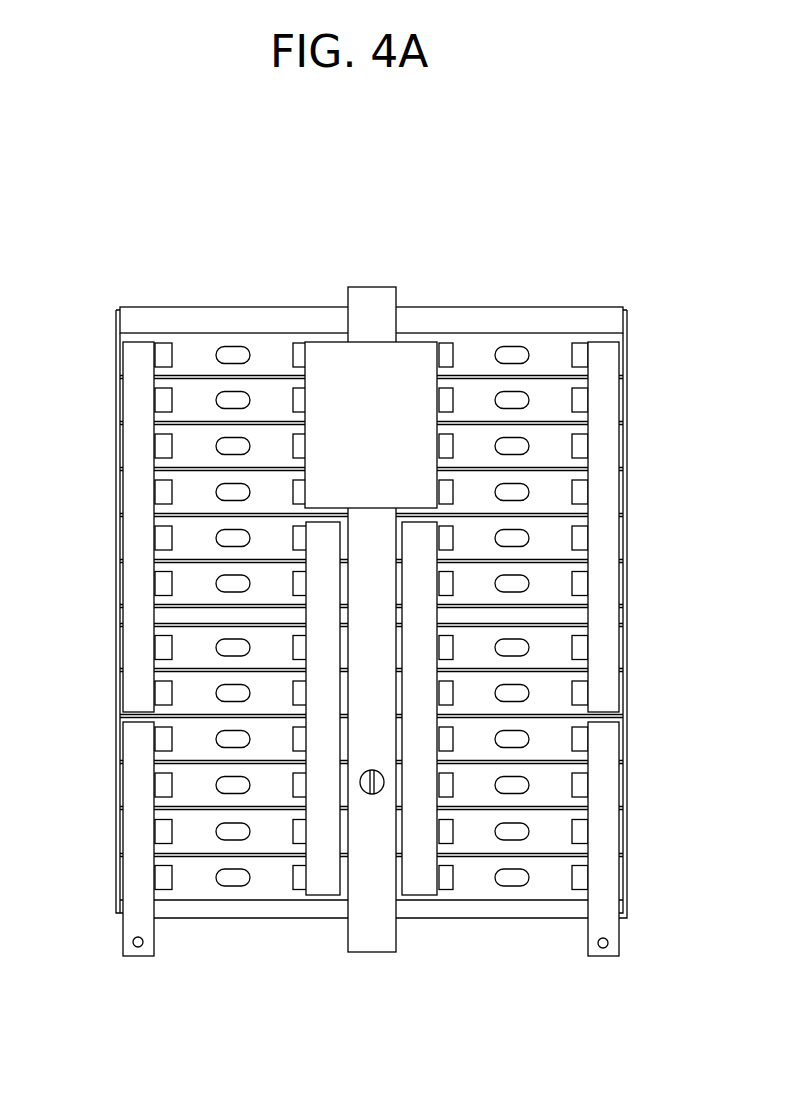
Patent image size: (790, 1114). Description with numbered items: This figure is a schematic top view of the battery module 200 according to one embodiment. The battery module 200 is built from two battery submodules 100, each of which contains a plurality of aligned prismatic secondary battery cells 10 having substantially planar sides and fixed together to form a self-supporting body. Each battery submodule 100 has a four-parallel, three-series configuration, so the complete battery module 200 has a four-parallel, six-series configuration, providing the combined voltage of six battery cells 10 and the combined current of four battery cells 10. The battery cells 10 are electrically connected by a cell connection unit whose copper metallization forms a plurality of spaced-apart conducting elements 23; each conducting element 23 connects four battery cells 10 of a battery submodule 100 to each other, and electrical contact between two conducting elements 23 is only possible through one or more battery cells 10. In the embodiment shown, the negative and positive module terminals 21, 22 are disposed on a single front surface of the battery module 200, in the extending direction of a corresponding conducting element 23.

The battery module 200 is at (136, 285).
The secondary battery cell 10 is at (546, 345).
The battery submodule 100 is at (251, 958).
The negative module terminal 21 is at (123, 945).
The positive module terminal 22 is at (620, 941).
The conducting element 23 is at (315, 603).